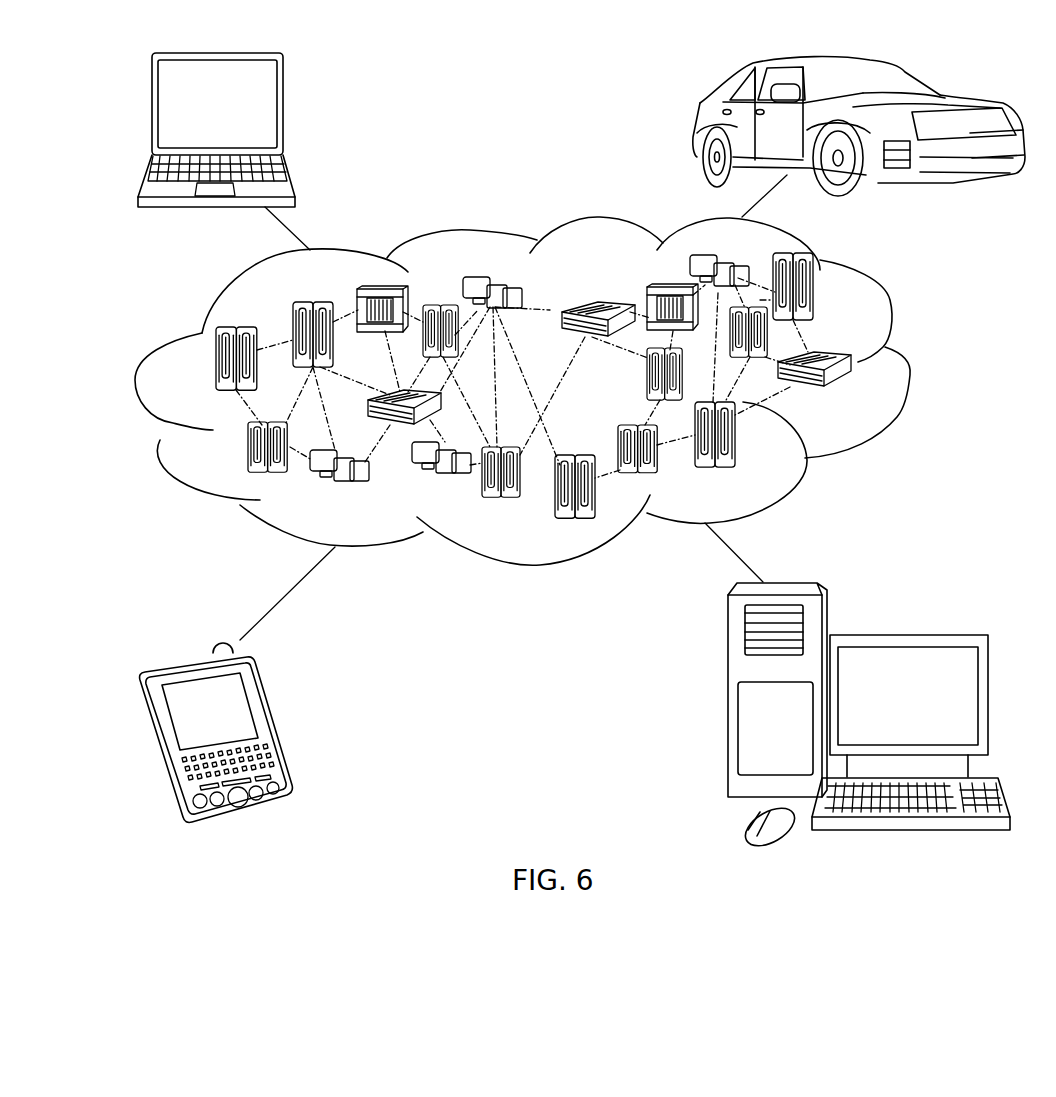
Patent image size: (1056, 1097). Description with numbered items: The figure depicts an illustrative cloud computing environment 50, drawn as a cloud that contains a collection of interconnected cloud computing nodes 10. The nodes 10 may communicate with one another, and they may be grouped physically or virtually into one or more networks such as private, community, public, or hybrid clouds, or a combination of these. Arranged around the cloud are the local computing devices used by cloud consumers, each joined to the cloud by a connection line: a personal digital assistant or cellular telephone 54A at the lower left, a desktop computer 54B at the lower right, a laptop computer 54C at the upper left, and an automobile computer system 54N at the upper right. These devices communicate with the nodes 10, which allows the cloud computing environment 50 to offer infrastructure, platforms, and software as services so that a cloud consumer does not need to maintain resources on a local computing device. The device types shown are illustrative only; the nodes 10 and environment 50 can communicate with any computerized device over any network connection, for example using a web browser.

The laptop computer 54C is at (283, 112).
The automobile computer system 54N is at (700, 127).
The cloud computing environment 50 is at (547, 428).
The cloud computing nodes 10 is at (852, 393).
The personal digital assistant (PDA) or cellular telephone 54A is at (272, 727).
The desktop computer 54B is at (903, 635).